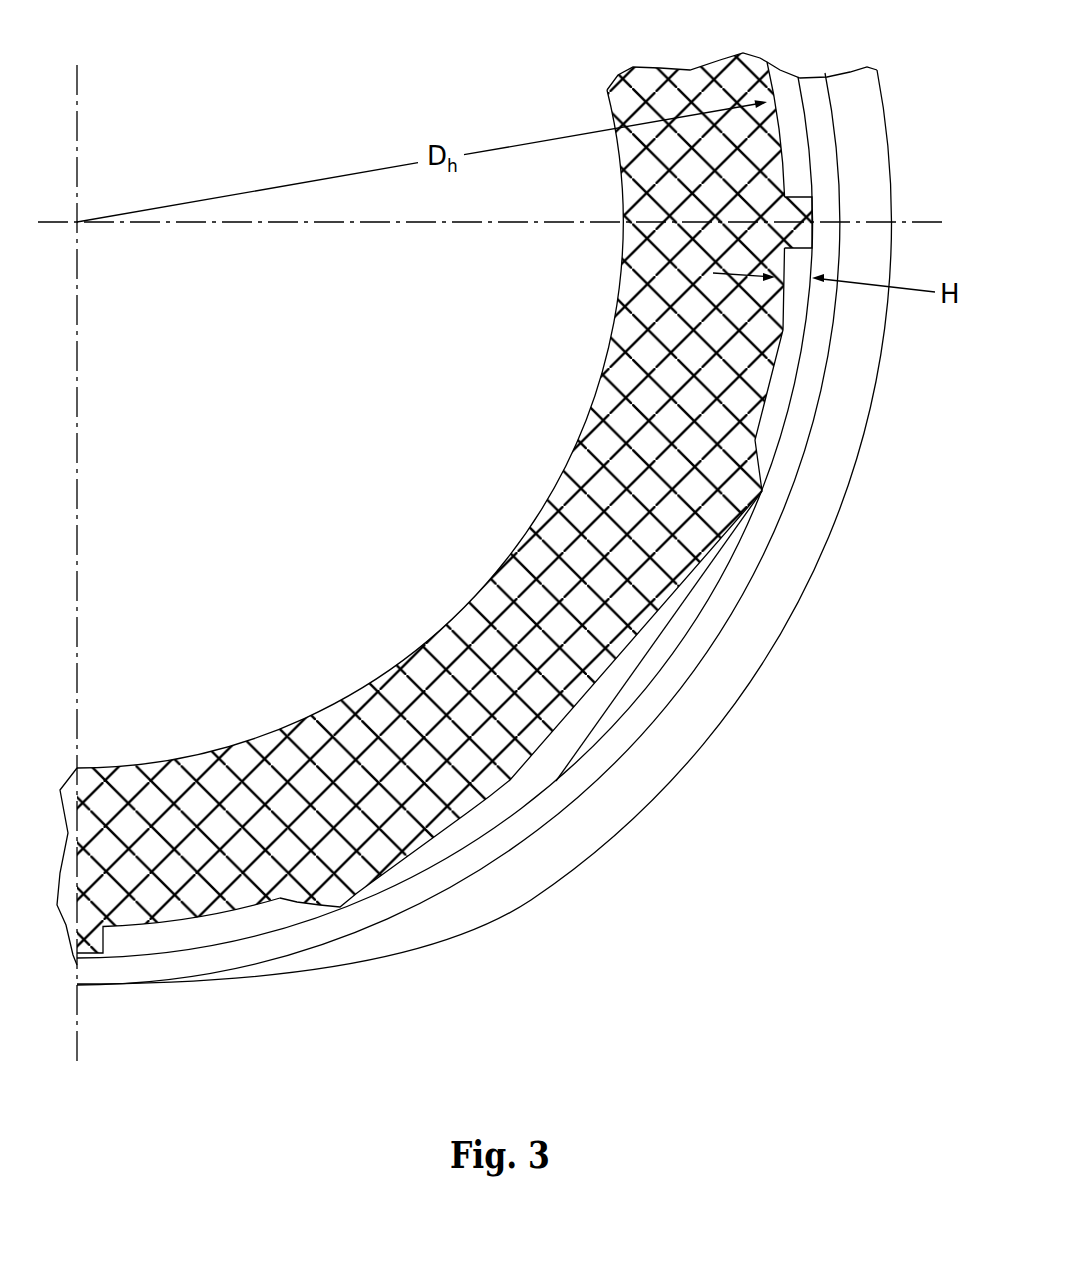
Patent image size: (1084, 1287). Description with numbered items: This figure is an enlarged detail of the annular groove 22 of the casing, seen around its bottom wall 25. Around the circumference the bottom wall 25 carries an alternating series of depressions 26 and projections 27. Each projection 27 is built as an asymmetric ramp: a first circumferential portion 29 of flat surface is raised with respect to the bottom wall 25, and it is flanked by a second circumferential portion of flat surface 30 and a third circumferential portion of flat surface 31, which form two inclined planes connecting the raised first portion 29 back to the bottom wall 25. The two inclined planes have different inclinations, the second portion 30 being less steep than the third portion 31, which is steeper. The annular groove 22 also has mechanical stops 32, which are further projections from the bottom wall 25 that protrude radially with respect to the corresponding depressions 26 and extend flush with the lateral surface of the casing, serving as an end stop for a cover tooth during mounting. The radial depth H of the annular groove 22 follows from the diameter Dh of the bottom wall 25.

The bottom wall 25 is at (786, 133).
The mechanical stop 32 is at (795, 215).
The projection 27 is at (746, 497).
The annular groove 22 is at (687, 608).
The depression 26 is at (597, 732).
The second circumferential portion of flat surface 30 is at (417, 862).
The first circumferential portion of flat surface 29 is at (360, 905).
The third circumferential portion of flat surface 31 is at (300, 902).